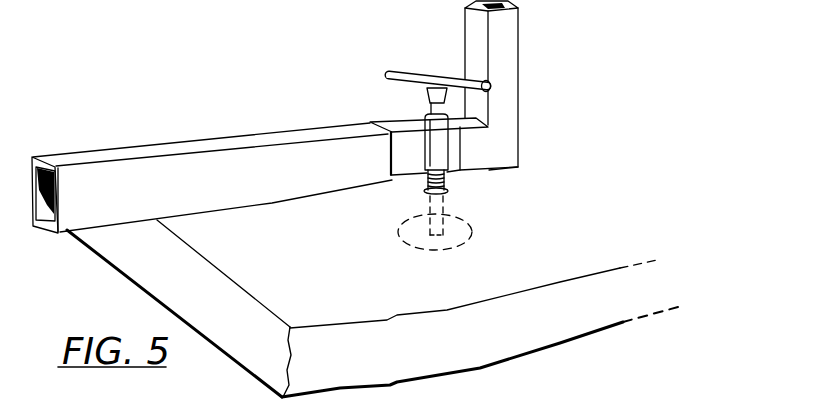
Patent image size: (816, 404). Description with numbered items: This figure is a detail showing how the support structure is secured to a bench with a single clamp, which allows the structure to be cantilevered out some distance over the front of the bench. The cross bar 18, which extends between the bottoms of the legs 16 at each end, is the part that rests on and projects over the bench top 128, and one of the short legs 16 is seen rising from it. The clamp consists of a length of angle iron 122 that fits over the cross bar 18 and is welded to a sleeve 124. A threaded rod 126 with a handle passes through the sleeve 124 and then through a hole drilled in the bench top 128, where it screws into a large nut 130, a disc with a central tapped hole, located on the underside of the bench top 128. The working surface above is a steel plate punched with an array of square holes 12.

The square holes 12 is at (661, 403).
The short legs 16 is at (505, 43).
The cross bar 18 is at (212, 168).
The angle iron 122 is at (410, 162).
The sleeve 124 is at (440, 153).
The threaded rod 126 is at (446, 105).
The bench top 128 is at (362, 293).
The large nut 130 is at (458, 246).